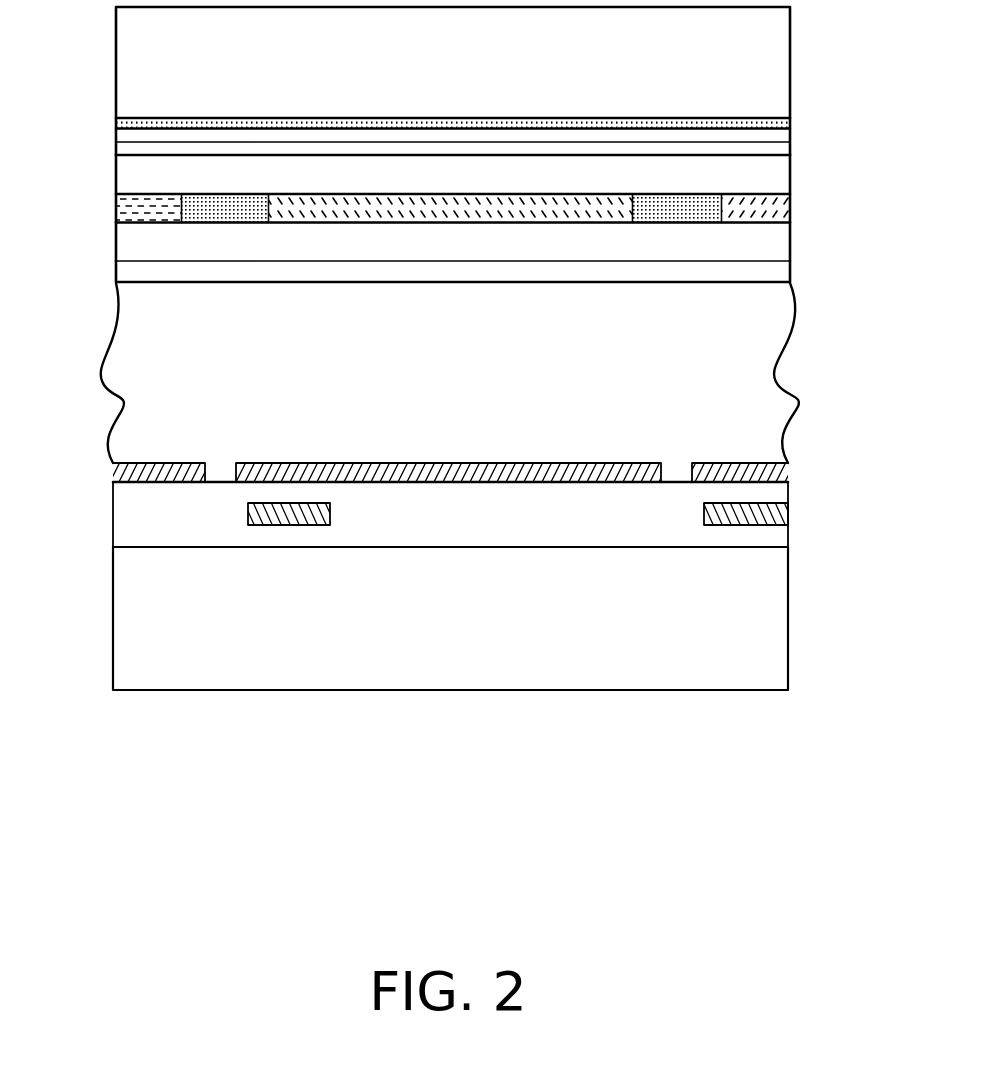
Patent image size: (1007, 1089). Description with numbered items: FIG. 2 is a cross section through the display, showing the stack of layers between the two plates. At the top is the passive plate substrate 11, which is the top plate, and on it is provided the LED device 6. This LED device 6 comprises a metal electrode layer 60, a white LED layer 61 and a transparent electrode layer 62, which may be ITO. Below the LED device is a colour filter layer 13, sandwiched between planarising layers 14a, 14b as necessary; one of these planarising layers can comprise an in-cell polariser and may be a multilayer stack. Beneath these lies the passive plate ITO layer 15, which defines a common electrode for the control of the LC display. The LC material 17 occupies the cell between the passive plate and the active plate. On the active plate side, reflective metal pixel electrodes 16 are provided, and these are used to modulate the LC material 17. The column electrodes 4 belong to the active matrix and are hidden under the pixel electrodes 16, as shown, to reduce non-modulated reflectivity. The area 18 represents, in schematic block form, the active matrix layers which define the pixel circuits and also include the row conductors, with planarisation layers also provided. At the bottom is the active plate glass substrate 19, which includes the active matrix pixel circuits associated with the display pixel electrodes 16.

The passive plate substrate 11 is at (130, 70).
The LED device 6 is at (471, 136).
The metal electrode layer 60 is at (783, 116).
The white LED layer 61 is at (775, 133).
The transparent electrode layer 62 is at (775, 150).
The planarising layer 14a is at (130, 175).
The colour filter layer 13 is at (130, 207).
The planarising layer 14b is at (130, 243).
The passive plate ITO layer 15 is at (130, 274).
The LC material 17 is at (418, 380).
The reflective metal pixel electrodes 16 is at (128, 468).
The active matrix layers 18 is at (128, 512).
The column electrodes 4 is at (302, 526).
The active plate glass substrate 19 is at (128, 627).